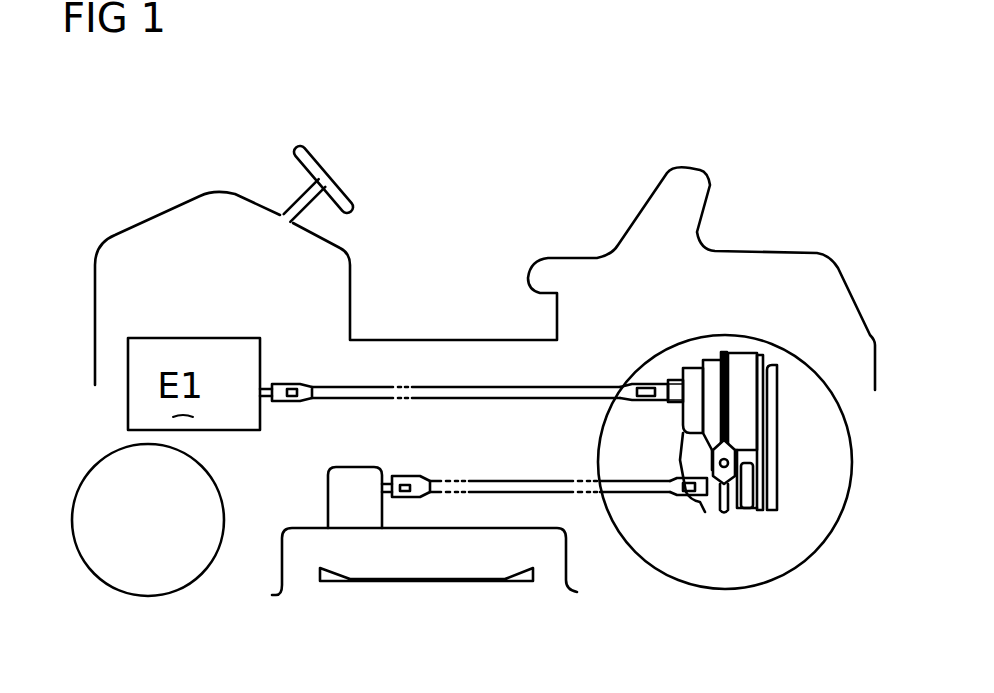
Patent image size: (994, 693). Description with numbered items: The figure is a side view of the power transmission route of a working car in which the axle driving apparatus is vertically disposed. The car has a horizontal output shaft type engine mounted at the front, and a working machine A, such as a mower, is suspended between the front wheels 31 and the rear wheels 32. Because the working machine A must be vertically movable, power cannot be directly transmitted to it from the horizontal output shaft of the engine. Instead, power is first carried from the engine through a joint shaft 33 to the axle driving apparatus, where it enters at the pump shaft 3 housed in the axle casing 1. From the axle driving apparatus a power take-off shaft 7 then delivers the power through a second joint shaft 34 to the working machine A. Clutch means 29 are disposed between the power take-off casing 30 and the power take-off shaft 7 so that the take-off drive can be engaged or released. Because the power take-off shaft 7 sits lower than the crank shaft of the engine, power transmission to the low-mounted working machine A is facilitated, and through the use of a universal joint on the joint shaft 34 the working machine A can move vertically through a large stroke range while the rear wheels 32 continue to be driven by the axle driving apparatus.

The axle casing 1 is at (747, 405).
The pump shaft 3 is at (670, 378).
The power take-off shaft 7 is at (708, 510).
The clutch means 29 is at (745, 515).
The power take-off casing 30 is at (772, 503).
The front wheels 31 is at (220, 548).
The rear wheels 32 is at (770, 582).
The joint shaft 33 is at (525, 350).
The joint shaft 34 is at (545, 482).
The working machine A is at (298, 527).